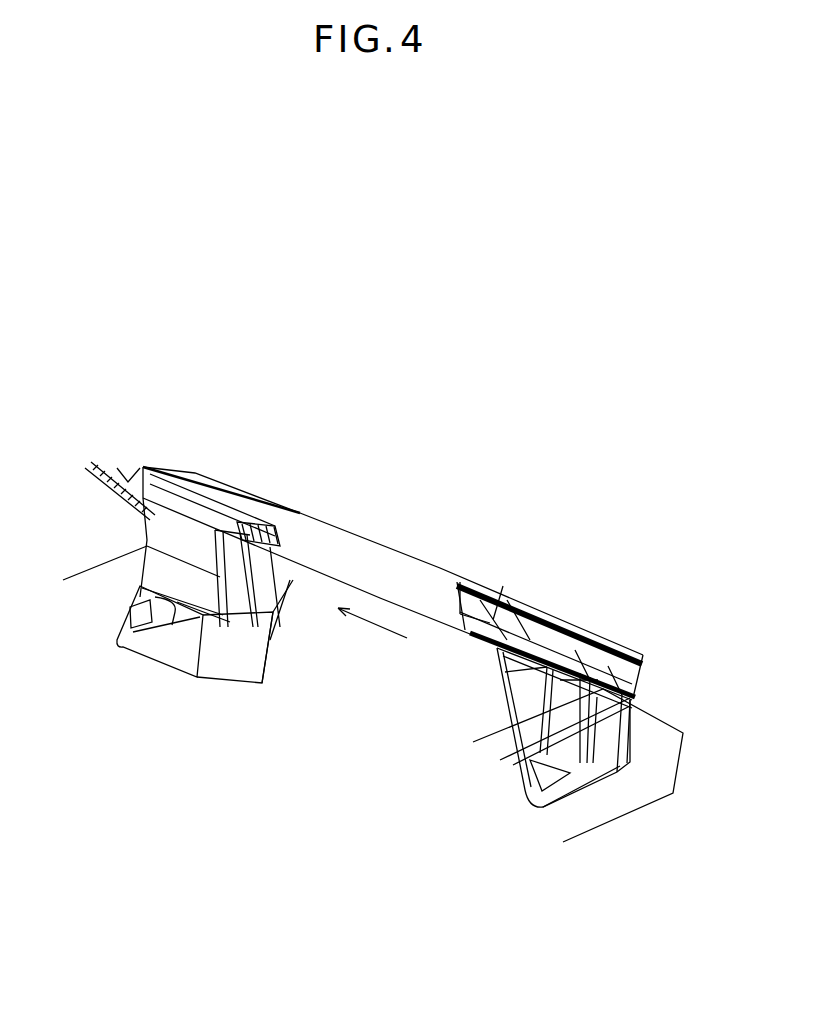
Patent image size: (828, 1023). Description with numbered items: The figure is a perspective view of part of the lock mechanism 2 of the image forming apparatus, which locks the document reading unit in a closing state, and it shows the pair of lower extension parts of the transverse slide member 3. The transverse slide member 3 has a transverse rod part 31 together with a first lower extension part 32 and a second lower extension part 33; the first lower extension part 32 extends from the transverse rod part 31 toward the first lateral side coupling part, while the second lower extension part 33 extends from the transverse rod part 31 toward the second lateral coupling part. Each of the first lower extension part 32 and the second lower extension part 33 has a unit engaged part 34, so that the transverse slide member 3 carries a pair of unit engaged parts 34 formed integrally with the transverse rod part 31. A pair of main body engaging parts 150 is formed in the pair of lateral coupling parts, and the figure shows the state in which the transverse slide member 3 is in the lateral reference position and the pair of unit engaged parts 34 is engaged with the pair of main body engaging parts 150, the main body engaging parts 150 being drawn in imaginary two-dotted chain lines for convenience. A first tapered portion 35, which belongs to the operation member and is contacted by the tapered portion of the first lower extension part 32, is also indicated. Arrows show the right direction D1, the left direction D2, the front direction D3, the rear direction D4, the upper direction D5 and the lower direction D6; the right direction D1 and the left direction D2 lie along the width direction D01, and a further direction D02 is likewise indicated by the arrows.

The lock mechanism 2 is at (205, 428).
The transverse slide member 3 is at (478, 514).
The transverse rod part 31 is at (474, 581).
The first lower extension part 32 is at (281, 656).
The second lower extension part 33 is at (492, 722).
The unit engaged part 34 is at (141, 588).
The first tapered portion 35 is at (237, 659).
The main body engaging part 150 is at (110, 556).
The right direction D1 is at (278, 827).
The left direction D2 is at (278, 827).
The front direction D3 is at (278, 827).
The rear direction D4 is at (278, 827).
The upper direction D5 is at (278, 827).
The lower direction D6 is at (278, 827).
The width direction D01 is at (278, 827).
The direction D02 is at (278, 827).